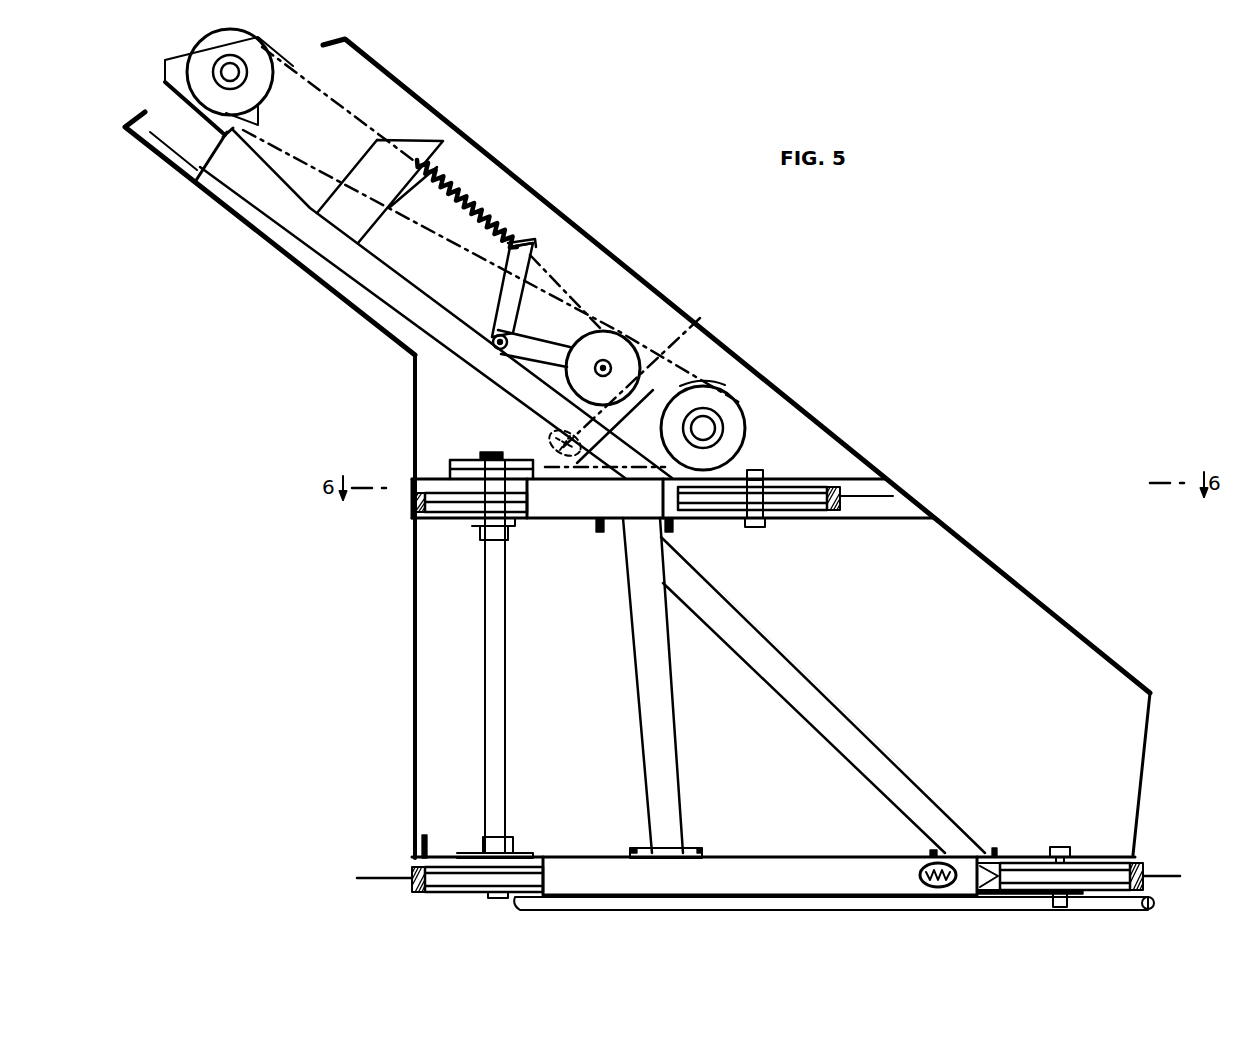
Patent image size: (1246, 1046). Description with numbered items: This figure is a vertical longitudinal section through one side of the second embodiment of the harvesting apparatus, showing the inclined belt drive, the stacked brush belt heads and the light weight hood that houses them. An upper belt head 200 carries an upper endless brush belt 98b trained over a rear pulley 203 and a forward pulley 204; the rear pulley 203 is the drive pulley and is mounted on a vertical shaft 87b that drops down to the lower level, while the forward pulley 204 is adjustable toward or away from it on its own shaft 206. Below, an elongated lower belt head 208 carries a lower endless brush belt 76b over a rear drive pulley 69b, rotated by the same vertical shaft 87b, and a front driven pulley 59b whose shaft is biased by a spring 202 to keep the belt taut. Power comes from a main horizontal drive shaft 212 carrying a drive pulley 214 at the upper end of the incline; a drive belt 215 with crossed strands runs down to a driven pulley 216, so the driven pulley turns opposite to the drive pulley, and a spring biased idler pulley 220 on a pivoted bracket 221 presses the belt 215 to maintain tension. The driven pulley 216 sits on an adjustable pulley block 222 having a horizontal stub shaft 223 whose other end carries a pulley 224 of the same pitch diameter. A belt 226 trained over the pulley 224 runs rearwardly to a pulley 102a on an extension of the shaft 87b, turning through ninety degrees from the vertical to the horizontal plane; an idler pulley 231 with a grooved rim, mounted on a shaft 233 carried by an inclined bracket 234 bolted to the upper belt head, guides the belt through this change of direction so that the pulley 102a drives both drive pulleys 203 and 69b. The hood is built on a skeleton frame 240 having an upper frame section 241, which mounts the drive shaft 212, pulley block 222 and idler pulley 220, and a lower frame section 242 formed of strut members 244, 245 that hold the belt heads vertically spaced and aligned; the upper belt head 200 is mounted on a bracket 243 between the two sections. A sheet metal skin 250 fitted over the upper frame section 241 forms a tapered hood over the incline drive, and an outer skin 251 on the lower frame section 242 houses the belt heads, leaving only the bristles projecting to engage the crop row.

The upper belt head 200 is at (887, 530).
The spring 202 is at (950, 863).
The rear pulley 203 is at (475, 500).
The forward pulley 204 is at (723, 500).
The shaft 206 is at (757, 530).
The lower belt head 208 is at (790, 857).
The main horizontal drive shaft 212 is at (221, 72).
The drive pulley 214 is at (273, 72).
The drive belt 215 is at (688, 325).
The driven pulley 216 is at (742, 405).
The idler pulley 220 is at (617, 345).
The pivoted bracket 221 is at (503, 293).
The adjustable pulley block 222 is at (725, 378).
The horizontal stub shaft 223 is at (716, 430).
The pulley 224 is at (732, 408).
The belt 226 is at (631, 498).
The idler pulley 231 is at (540, 447).
The shaft 233 is at (592, 415).
The bracket 234 is at (550, 498).
The skeleton frame 240 is at (383, 321).
The upper frame section 241 is at (350, 256).
The lower frame section 242 is at (864, 719).
The bracket 243 is at (613, 530).
The strut member 244 is at (648, 752).
The strut member 245 is at (780, 668).
The sheet metal skin 250 is at (257, 235).
The outer skin 251 is at (415, 655).
The driven pulley 59b is at (1122, 863).
The drive pulley 69b is at (433, 875).
The endless brush belt 76b is at (401, 868).
The vertical shaft 87b is at (506, 688).
The endless brush belt 98b is at (838, 488).
The pulley 102a is at (464, 455).